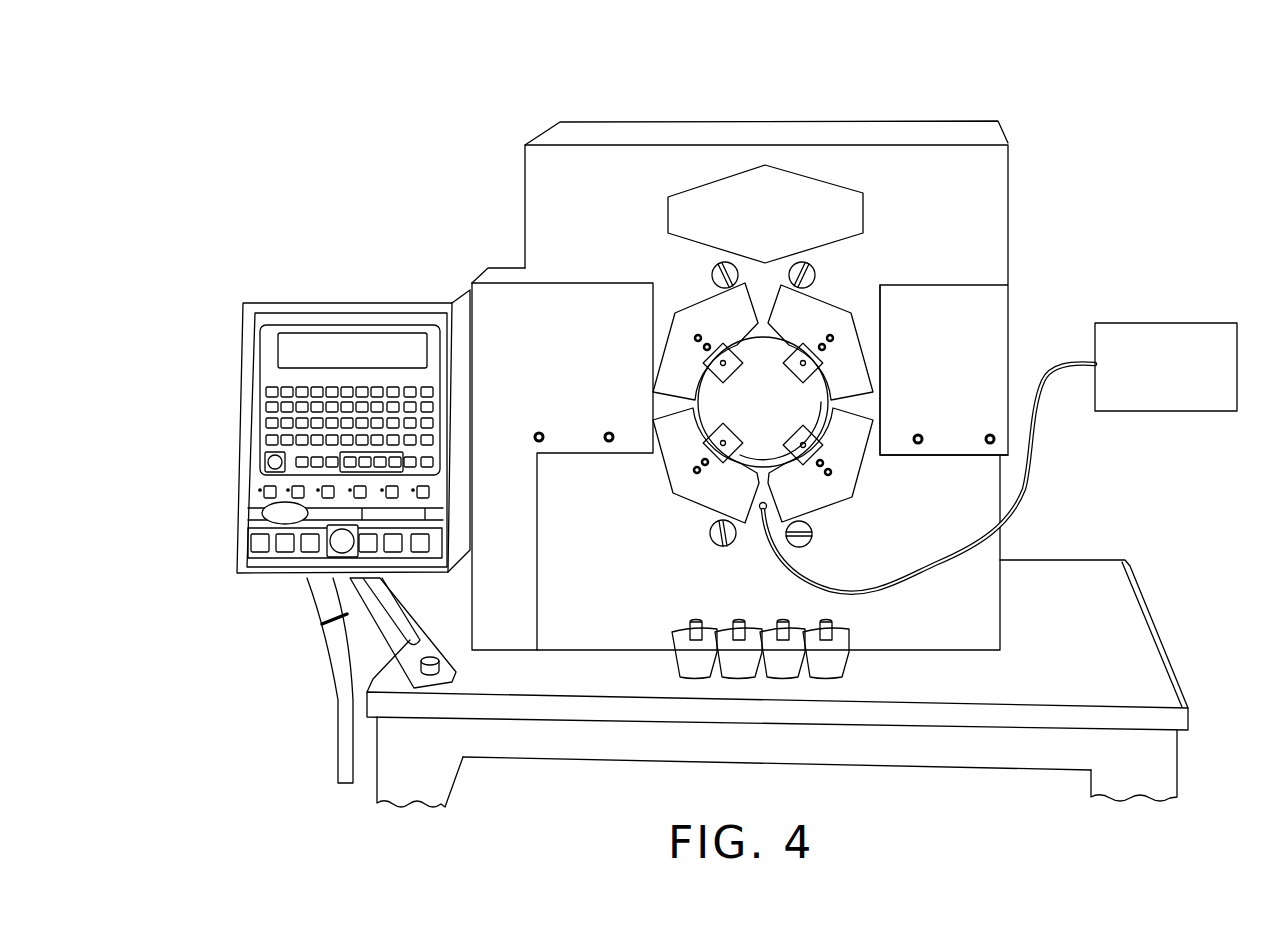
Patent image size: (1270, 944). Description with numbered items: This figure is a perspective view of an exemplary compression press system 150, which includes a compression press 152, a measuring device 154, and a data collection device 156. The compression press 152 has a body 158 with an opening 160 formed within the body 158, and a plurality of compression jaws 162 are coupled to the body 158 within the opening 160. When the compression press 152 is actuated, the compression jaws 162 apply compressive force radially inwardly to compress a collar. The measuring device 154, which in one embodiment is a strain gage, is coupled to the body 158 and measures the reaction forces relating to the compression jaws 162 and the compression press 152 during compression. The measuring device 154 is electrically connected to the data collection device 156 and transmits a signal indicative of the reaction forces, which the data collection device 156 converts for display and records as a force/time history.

The compression press system 150 is at (438, 85).
The compression press 152 is at (903, 112).
The measuring device 154 is at (760, 512).
The data collection device 156 is at (1183, 383).
The body 158 is at (950, 201).
The opening 160 is at (763, 378).
The compression jaws 162 is at (793, 357).